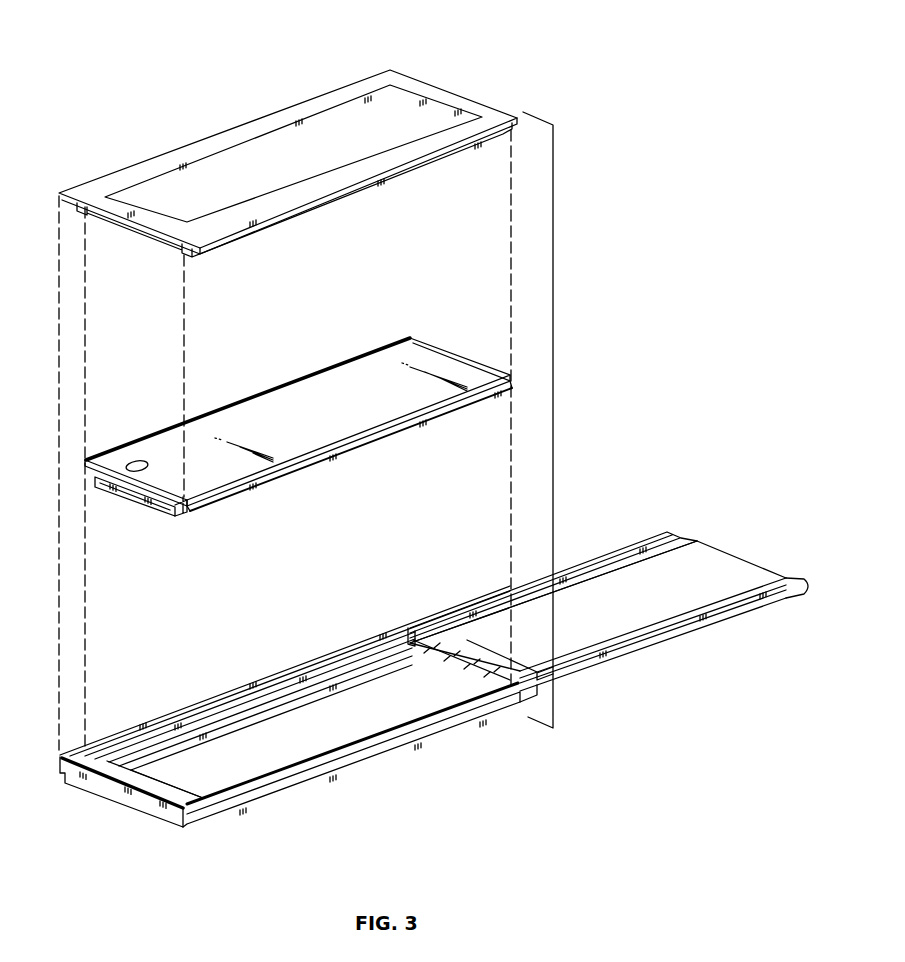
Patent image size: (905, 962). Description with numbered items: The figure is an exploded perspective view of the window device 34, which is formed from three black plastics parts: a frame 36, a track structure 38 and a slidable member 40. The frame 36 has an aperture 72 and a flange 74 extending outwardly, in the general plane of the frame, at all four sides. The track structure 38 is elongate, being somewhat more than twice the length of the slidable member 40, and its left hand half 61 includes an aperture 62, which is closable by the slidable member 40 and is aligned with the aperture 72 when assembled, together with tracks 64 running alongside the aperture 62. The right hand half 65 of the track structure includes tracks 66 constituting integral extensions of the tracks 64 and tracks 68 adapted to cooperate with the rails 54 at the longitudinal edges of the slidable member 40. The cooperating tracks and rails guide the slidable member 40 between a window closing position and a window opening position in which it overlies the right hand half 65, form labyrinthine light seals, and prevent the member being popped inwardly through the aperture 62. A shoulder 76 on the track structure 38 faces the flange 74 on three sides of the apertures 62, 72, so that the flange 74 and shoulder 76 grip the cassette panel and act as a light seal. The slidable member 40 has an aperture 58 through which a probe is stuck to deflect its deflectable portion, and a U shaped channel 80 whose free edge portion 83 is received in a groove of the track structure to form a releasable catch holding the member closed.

The frame 36 is at (288, 375).
The flange 74 is at (100, 190).
The aperture 72 is at (287, 177).
The window device 34 is at (556, 360).
The slidable member 40 is at (298, 426).
The upper rails 54 is at (253, 392).
The aperture 58 is at (131, 458).
The free edge portion 83 is at (126, 495).
The U shaped channel 80 is at (160, 512).
The track structure 38 is at (306, 725).
The shoulder 76 is at (128, 838).
The left hand half 61 is at (225, 690).
The tracks 64 is at (218, 726).
The aperture 62 is at (234, 756).
The tracks 66 is at (608, 590).
The tracks 68 is at (679, 532).
The right hand half 65 is at (607, 547).